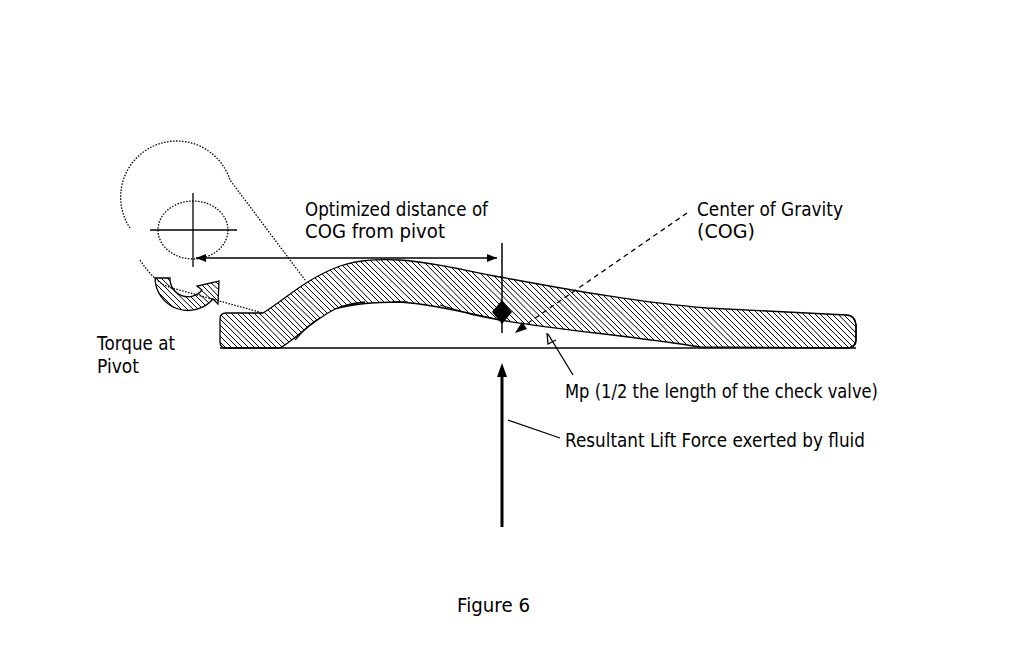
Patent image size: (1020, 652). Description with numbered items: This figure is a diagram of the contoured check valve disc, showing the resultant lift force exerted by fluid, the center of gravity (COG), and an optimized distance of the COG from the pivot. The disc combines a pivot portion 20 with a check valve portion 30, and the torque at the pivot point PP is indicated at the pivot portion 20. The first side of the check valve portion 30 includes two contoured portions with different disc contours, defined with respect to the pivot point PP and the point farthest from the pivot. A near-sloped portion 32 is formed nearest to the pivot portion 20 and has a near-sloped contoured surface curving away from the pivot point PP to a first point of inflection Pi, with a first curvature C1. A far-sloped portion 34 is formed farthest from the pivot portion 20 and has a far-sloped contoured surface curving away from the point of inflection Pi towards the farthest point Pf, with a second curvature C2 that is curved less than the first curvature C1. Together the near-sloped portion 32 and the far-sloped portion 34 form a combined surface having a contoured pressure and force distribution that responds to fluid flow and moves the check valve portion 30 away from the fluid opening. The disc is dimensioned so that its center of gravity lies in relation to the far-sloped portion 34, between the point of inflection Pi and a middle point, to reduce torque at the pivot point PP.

The pivot portion 20 is at (207, 187).
The check valve portion 30 is at (223, 347).
The near-sloped portion 32 is at (312, 333).
The far-sloped portion 34 is at (449, 318).
The pivot point PP is at (193, 229).
The farthest point Pf is at (857, 328).
The point of inflection Pi is at (400, 318).
The first curvature C1 is at (343, 313).
The second curvature C2 is at (473, 315).